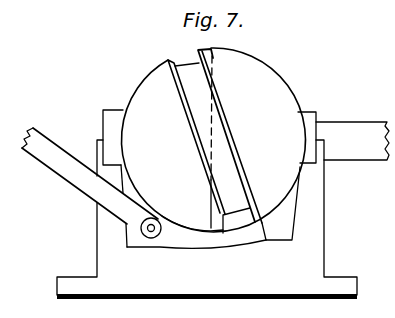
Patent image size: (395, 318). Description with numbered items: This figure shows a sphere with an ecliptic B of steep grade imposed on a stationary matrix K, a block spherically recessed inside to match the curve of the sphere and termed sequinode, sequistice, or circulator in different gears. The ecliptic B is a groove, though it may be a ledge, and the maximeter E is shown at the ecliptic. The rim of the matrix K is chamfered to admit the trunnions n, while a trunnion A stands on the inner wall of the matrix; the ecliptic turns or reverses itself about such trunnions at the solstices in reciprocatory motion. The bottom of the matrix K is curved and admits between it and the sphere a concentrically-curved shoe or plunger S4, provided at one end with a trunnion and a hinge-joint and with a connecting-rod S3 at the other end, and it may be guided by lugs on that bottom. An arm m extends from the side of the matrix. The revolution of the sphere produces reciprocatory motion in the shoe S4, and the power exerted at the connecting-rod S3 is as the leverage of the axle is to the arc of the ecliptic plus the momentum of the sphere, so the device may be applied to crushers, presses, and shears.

The matrix K is at (207, 219).
The trunnion n is at (209, 130).
The arm m is at (352, 141).
The ecliptic B is at (196, 131).
The maximeter E is at (232, 144).
The trunnion A is at (236, 220).
The connecting-rod S3 is at (90, 176).
The shoe or plunger S4 is at (196, 232).